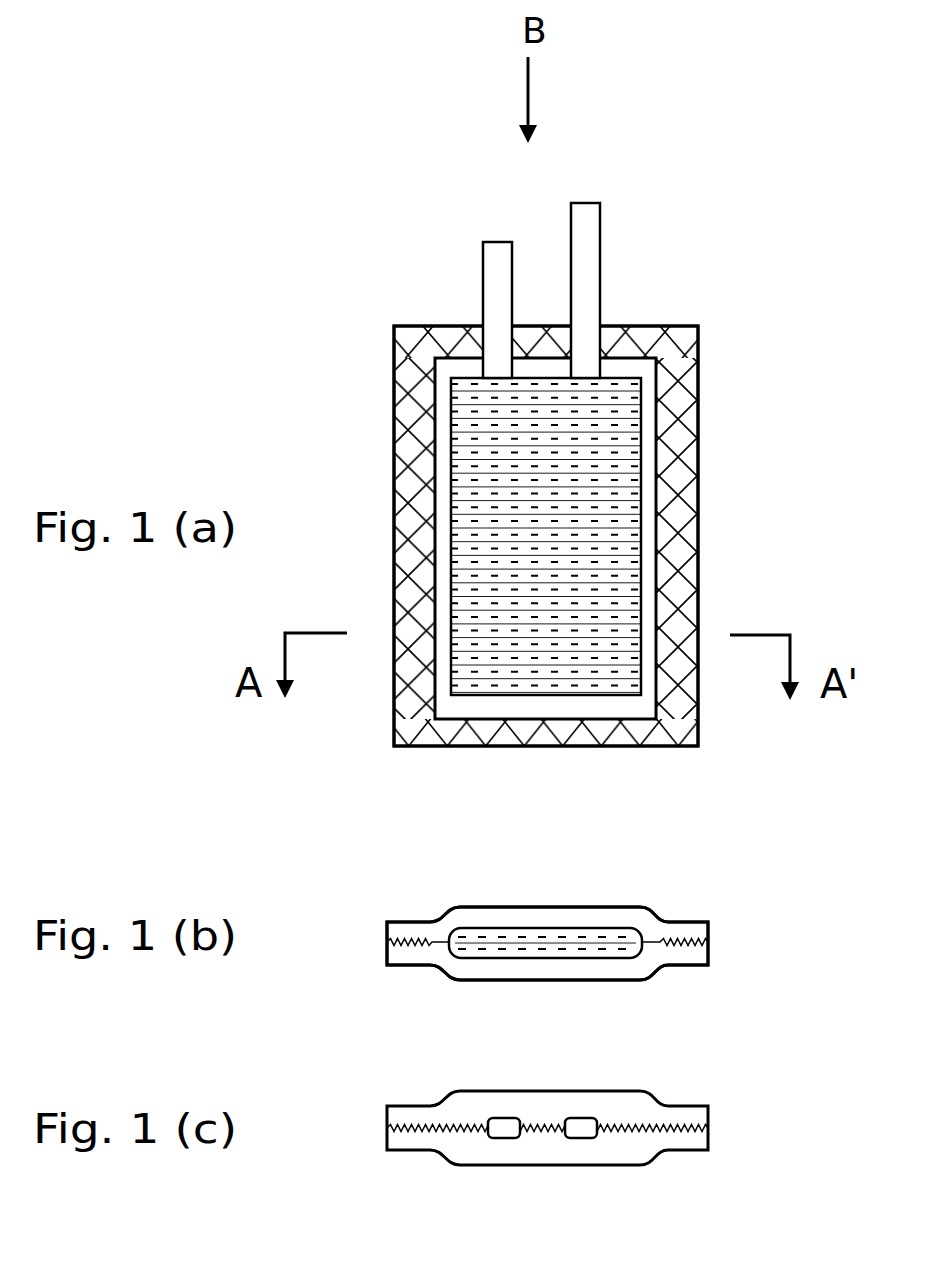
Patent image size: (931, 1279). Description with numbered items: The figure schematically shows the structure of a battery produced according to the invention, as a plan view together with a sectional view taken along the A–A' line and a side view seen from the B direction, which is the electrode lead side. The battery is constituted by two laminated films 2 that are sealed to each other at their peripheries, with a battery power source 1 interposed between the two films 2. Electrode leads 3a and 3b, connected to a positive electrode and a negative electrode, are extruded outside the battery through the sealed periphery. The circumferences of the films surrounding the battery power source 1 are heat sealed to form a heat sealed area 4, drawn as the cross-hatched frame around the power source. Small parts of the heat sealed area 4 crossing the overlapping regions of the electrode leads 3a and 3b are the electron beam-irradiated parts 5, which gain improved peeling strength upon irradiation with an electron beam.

The battery power source 1 is at (607, 507).
The laminated film 2 is at (627, 972).
The electrode lead 3a is at (492, 292).
The electrode lead 3b is at (578, 243).
The heat sealed area 4 is at (670, 427).
The electron beam-irradiated part 5 is at (600, 653).